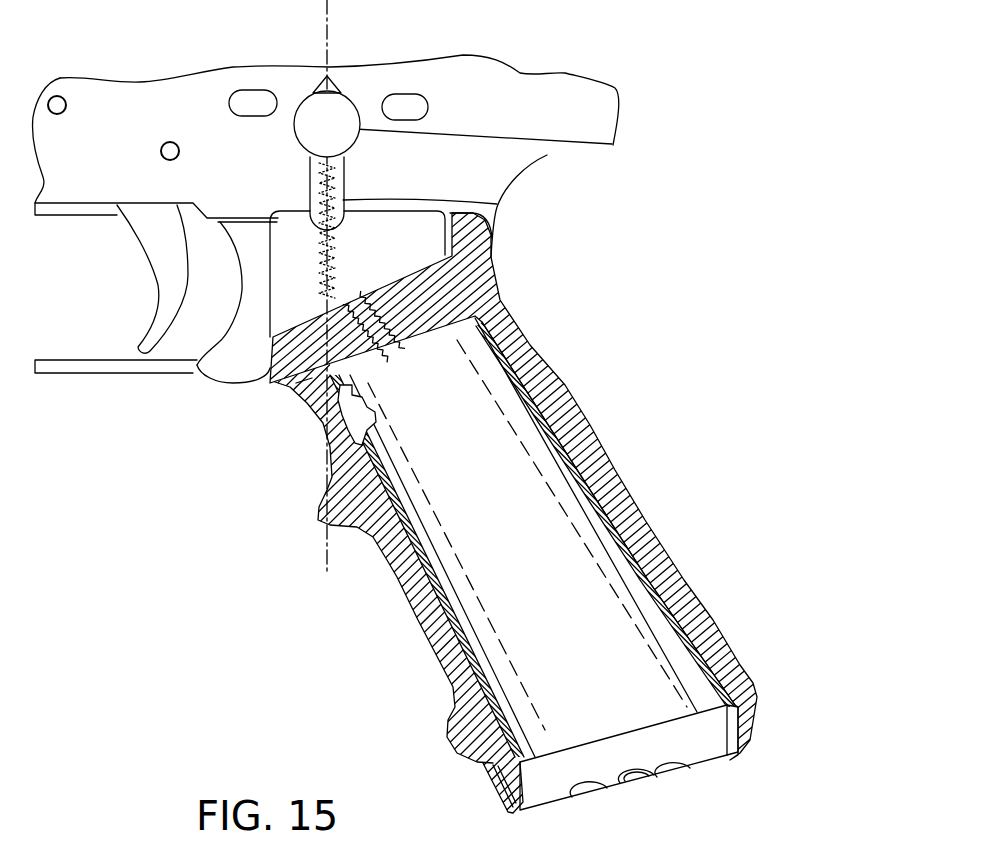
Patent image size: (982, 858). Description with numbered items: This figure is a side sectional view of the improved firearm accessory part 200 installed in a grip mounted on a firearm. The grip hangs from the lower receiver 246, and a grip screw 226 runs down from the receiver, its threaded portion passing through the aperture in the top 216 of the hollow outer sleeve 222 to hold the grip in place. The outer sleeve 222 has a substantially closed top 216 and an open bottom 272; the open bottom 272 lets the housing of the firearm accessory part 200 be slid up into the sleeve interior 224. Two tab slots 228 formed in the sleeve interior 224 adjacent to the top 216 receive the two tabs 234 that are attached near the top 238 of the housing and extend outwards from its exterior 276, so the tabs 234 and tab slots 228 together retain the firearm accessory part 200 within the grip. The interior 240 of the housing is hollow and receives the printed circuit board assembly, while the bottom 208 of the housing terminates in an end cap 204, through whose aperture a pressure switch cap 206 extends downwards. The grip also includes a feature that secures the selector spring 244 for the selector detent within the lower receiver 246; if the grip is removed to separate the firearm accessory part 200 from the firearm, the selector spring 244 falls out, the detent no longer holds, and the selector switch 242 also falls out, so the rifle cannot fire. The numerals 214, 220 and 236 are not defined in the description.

The frame 214 is at (530, 45).
The selector switch 242 is at (548, 156).
The lower receiver 246 is at (472, 168).
The selector spring 244 is at (497, 204).
The grip screw 226 is at (458, 262).
The top 216 is at (455, 292).
The tab slots 228 is at (505, 338).
The tabs 234 is at (505, 354).
The firearm accessory part 200 is at (491, 429).
The exterior 276 is at (613, 472).
The outer sleeve 222 is at (625, 494).
The inner liner 220 is at (640, 557).
The sleeve interior 224 is at (647, 592).
The top 238 is at (300, 385).
The interior 240 is at (345, 405).
The open bottom 272 is at (740, 712).
The grip lower end 236 is at (745, 742).
The end cap 204 is at (713, 735).
The bottom 208 is at (697, 760).
The pressure switch cap 206 is at (637, 782).